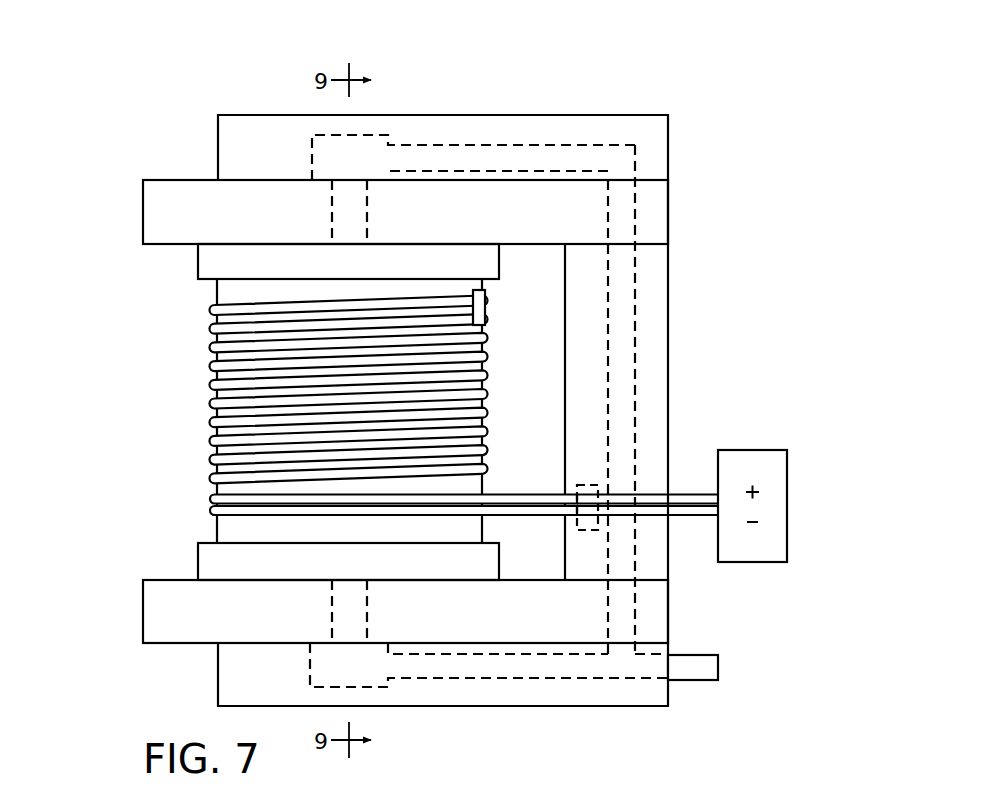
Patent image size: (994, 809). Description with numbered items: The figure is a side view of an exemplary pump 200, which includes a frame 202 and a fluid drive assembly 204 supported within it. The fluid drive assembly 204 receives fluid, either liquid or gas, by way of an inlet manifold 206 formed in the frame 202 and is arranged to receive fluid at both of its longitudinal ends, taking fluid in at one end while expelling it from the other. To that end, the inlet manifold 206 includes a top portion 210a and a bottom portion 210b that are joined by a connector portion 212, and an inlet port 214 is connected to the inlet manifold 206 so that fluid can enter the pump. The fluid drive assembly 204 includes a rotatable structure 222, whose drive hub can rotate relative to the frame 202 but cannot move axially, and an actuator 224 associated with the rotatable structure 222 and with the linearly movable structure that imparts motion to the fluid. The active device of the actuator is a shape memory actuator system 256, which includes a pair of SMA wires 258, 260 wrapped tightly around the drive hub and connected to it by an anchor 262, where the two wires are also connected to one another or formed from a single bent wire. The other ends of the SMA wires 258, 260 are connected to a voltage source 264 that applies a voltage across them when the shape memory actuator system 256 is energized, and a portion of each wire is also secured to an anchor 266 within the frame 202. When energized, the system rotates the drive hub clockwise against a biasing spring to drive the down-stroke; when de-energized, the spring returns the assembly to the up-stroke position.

The pump 200 is at (539, 55).
The frame 202 is at (669, 221).
The fluid drive assembly 204 is at (128, 289).
The inlet manifold 206 is at (647, 266).
The top portion of inlet manifold 210a is at (571, 143).
The bottom portion of inlet manifold 210b is at (548, 682).
The connector portion 212 is at (637, 357).
The inlet port 214 is at (691, 682).
The rotatable structure 222 is at (213, 531).
The actuator 224 is at (178, 501).
The shape memory actuator system 256 is at (751, 387).
The SMA wire 258 is at (683, 494).
The SMA wire 260 is at (683, 516).
The anchor 262 is at (490, 316).
The voltage source 264 is at (788, 471).
The anchor 266 is at (588, 484).